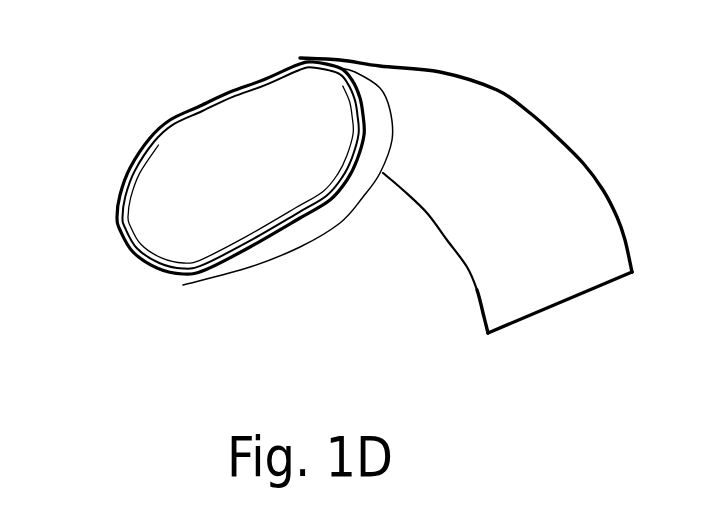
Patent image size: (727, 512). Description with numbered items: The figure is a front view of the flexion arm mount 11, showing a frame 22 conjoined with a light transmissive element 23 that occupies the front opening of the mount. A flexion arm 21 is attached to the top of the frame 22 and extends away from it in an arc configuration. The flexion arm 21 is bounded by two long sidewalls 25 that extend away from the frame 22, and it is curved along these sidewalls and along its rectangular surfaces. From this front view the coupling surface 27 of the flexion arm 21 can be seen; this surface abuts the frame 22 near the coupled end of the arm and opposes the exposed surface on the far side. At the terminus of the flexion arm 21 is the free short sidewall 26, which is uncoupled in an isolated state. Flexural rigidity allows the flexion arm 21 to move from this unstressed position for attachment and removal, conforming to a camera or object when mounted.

The flexion arm mount 11 is at (257, 70).
The flexion arm 21 is at (515, 277).
The frame 22 is at (170, 127).
The light transmissive element 23 is at (163, 247).
The long sidewall 25 is at (585, 158).
The free short sidewall 26 is at (573, 300).
The coupling surface 27 is at (517, 213).